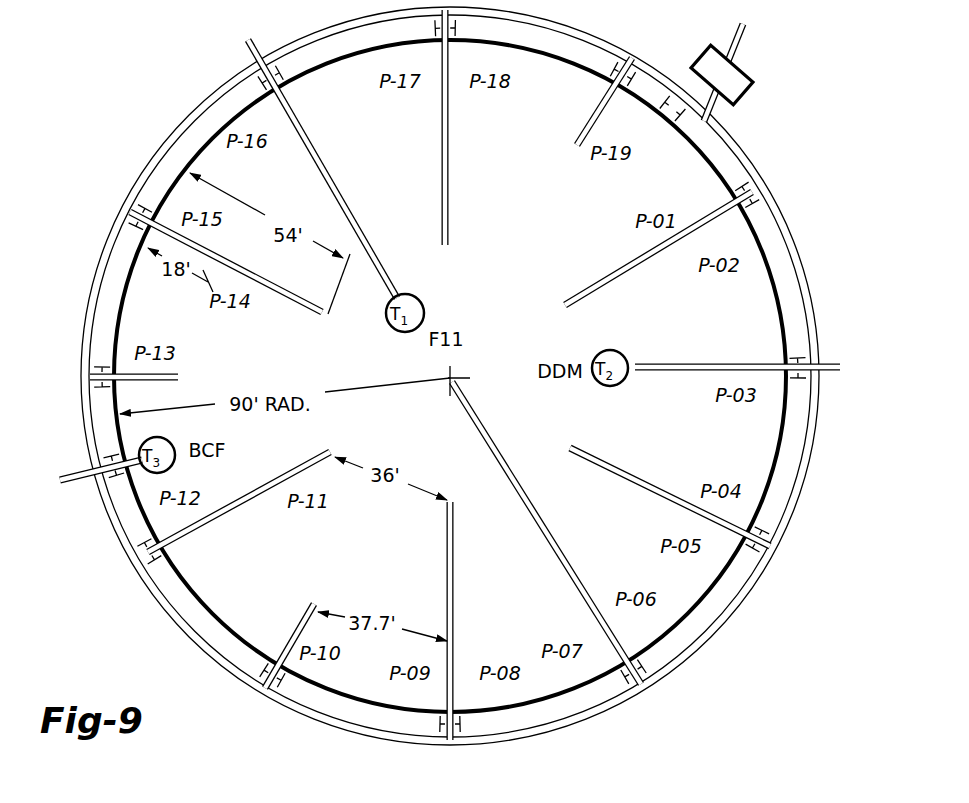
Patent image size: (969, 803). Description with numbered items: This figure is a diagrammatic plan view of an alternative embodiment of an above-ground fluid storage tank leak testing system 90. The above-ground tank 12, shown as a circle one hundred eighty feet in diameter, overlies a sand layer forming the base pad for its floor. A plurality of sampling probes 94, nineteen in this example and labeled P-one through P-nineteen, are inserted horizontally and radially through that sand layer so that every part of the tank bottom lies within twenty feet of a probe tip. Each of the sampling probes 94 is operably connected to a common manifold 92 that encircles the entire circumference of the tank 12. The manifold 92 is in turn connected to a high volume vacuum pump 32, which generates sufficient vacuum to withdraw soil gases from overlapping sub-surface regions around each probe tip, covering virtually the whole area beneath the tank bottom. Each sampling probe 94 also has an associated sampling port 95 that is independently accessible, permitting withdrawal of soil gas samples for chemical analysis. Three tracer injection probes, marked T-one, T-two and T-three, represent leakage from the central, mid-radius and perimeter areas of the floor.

The above-ground fluid storage tank leak testing system 90 is at (139, 152).
The common manifold 92 is at (298, 718).
The above-ground tank 12 is at (700, 614).
The sampling probes 94 is at (606, 113).
The sampling port 95 is at (656, 663).
The high volume vacuum pump 32 is at (739, 80).